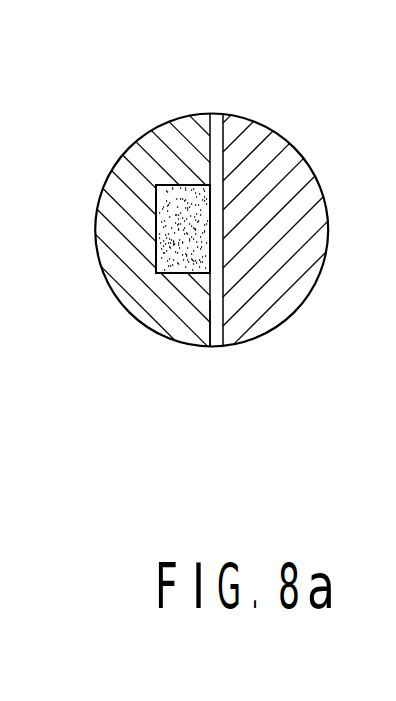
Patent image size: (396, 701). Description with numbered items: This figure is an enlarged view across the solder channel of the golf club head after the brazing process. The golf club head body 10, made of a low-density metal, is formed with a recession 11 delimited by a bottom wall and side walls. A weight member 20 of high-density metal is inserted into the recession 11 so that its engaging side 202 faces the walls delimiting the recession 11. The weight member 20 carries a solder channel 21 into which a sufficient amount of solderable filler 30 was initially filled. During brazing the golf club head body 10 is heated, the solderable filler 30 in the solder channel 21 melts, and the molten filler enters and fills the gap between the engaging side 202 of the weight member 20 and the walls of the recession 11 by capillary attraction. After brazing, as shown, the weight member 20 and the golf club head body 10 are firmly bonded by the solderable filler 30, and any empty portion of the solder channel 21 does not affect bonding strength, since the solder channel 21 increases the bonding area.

The golf club head body 10 is at (242, 163).
The recession 11 is at (225, 326).
The weight member 20 is at (112, 200).
The solder channel 21 is at (156, 254).
The solderable filler 30 is at (180, 263).
The engaging side 202 is at (210, 323).